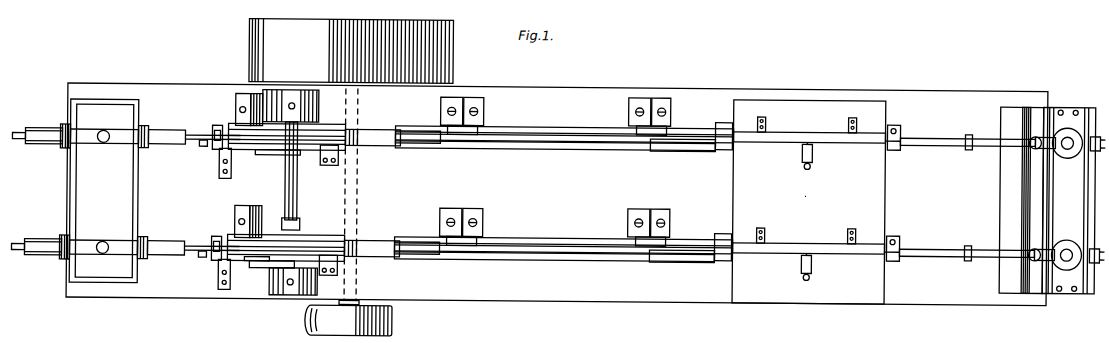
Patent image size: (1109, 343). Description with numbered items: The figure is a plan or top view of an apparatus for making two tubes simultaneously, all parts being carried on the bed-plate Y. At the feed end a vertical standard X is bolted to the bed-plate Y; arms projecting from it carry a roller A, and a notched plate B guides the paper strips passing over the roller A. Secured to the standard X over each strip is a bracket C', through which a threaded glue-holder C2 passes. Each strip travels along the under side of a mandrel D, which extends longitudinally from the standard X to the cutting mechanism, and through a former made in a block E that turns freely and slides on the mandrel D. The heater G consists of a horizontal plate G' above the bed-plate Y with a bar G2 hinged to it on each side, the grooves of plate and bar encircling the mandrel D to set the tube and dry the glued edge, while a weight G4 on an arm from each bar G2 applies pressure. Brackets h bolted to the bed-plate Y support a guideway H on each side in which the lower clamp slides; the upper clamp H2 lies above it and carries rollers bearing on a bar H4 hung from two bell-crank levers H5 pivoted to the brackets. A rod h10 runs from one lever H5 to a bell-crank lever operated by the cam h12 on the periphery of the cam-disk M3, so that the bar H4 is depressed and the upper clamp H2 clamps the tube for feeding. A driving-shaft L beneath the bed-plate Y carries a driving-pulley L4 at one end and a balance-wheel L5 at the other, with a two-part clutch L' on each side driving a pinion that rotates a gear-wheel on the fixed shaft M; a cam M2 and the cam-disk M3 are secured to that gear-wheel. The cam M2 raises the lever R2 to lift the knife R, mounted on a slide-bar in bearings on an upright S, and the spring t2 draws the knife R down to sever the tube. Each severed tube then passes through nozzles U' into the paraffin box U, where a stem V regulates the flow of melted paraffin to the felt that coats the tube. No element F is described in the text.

The bed-plate Y is at (557, 194).
The receptacle or box U is at (104, 191).
The nozzles U' is at (125, 192).
The stem V is at (105, 142).
The knife R is at (212, 129).
The upright S is at (231, 160).
The cam h12 is at (340, 117).
The shaft M is at (298, 190).
The cam-disk M3 is at (318, 108).
The lever R2 is at (305, 150).
The spring t2 is at (260, 154).
The cam M2 is at (269, 154).
The driving-shaft L is at (364, 194).
The two-part clutch L' is at (357, 228).
The balance-wheel L5 is at (351, 51).
The driving-pulley L4 is at (348, 324).
The guideway H is at (568, 120).
The upper clamp H2 is at (604, 129).
The bar H4 is at (677, 134).
The bell-crank levers H5 is at (454, 138).
The brackets h is at (560, 167).
The rod h10 is at (409, 126).
The heater G is at (817, 202).
The horizontal plate G' is at (810, 191).
The bar G2 is at (819, 127).
The weight G4 is at (812, 148).
The block F is at (896, 202).
The mandrel D is at (980, 140).
The block E is at (964, 201).
The standard X is at (1021, 200).
The plate B is at (1069, 201).
The glue-holder C2 is at (1067, 120).
The bracket C' is at (1031, 189).
The roller A is at (1100, 142).